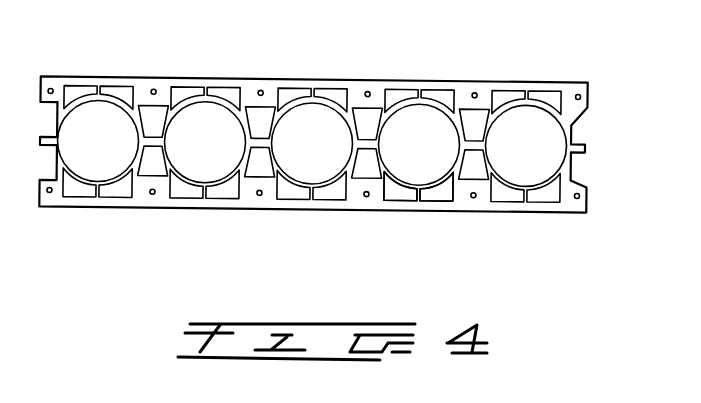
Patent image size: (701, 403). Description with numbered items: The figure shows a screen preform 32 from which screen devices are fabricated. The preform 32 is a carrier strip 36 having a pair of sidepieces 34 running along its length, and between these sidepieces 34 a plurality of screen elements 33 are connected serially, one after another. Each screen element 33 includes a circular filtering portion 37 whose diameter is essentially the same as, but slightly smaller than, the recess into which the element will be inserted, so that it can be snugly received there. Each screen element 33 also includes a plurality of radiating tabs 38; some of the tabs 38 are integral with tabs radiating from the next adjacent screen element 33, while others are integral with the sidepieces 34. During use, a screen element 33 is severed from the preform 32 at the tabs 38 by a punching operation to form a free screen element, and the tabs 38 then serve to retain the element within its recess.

The screen preform 32 is at (337, 143).
The screen element 33 is at (100, 172).
The sidepiece 34 is at (360, 80).
The carrier strip 36 is at (580, 218).
The circular filtering portion 37 is at (402, 189).
The radiating tab 38 is at (477, 150).